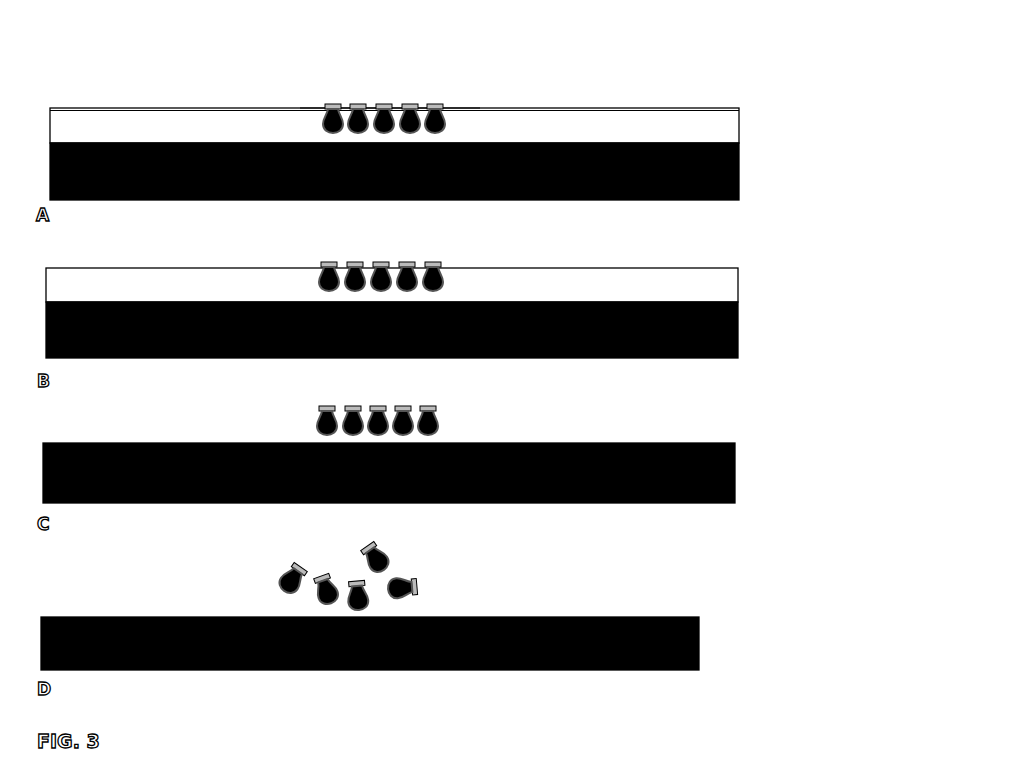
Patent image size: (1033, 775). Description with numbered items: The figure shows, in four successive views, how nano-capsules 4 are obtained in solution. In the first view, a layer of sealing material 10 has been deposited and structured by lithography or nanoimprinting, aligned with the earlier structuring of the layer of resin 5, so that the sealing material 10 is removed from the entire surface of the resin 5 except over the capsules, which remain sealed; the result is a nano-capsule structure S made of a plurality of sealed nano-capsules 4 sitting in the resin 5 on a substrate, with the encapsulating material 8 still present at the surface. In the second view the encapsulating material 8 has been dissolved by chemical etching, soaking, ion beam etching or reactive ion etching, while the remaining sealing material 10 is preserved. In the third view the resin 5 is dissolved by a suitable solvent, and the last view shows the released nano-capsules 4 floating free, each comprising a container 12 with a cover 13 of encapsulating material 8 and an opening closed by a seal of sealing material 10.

The nano-capsule 4 is at (442, 122).
The resin 5 is at (162, 120).
The encapsulating material 8 is at (242, 108).
The nano-capsule structure S is at (371, 105).
The sealing material 10 is at (410, 104).
The container 12 is at (382, 560).
The cover 13 is at (284, 588).